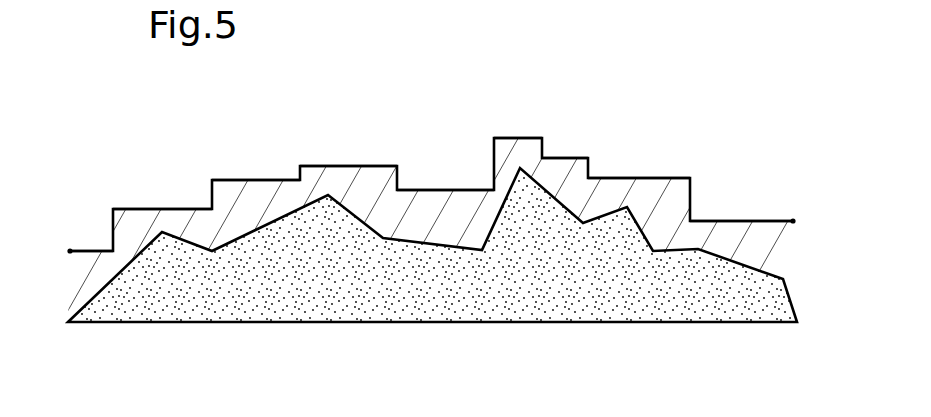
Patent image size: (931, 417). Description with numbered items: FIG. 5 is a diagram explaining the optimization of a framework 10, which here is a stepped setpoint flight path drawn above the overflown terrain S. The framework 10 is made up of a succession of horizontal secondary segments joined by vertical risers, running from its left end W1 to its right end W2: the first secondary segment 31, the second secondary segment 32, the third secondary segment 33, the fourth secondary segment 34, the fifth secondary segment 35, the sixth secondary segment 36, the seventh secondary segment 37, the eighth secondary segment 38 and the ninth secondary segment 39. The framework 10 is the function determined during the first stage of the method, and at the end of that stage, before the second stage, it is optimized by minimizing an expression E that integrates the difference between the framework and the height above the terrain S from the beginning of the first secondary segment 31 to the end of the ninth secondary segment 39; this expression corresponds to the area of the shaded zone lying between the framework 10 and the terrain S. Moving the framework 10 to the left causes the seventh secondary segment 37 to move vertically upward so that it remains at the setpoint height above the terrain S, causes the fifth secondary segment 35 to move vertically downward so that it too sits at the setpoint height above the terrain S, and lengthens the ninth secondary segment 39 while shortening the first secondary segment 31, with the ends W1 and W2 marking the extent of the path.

The framework 10 is at (374, 97).
The first secondary segment 31 is at (90, 251).
The second secondary segment 32 is at (172, 209).
The third secondary segment 33 is at (258, 180).
The fourth secondary segment 34 is at (343, 166).
The fifth secondary segment 35 is at (447, 190).
The sixth secondary segment 36 is at (510, 138).
The seventh secondary segment 37 is at (560, 158).
The eighth secondary segment 38 is at (668, 178).
The ninth secondary segment 39 is at (763, 221).
The overflown terrain S is at (462, 312).
The first end point W1 is at (46, 252).
The second end point W2 is at (817, 215).